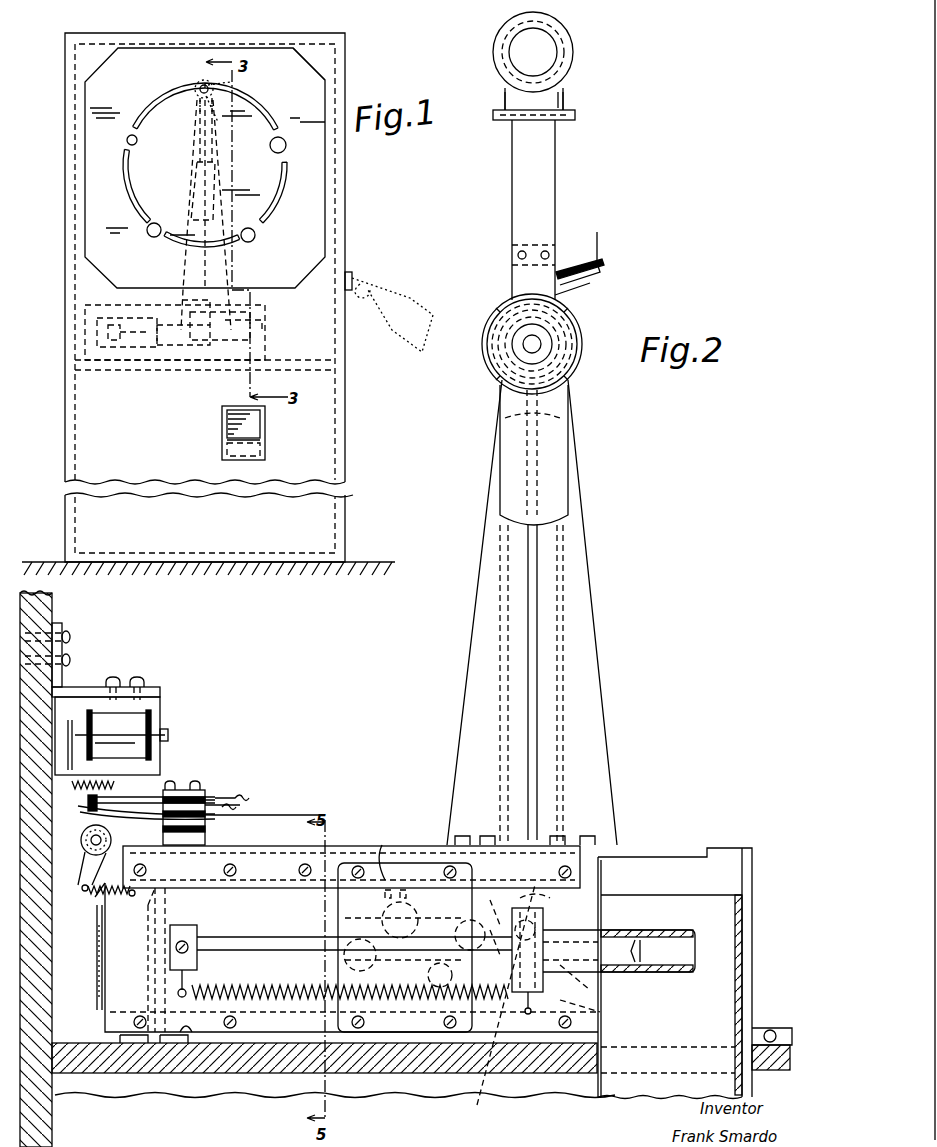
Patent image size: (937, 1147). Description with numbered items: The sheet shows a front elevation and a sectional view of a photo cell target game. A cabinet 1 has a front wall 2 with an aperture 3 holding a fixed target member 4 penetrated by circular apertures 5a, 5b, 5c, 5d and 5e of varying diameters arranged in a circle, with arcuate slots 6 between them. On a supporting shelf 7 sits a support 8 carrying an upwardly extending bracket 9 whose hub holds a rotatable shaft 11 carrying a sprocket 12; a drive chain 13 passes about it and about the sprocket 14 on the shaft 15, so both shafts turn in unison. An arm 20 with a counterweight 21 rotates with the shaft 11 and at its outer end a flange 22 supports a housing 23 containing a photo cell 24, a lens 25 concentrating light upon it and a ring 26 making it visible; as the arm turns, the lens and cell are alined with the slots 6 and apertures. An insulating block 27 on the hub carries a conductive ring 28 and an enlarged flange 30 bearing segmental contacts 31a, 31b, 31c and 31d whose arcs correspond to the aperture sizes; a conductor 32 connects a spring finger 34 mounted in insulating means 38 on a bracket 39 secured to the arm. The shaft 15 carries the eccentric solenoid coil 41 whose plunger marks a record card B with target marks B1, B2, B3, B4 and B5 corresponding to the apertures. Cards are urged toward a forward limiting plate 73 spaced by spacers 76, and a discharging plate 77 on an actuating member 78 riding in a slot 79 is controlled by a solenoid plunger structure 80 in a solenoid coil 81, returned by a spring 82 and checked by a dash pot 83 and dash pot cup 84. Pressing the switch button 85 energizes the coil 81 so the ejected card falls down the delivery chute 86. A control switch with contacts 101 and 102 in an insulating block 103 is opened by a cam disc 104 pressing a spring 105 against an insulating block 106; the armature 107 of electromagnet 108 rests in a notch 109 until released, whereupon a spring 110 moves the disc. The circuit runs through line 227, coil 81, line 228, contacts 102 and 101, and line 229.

In FIG. 1, the cabinet 1 is at (357, 191).
In FIG. 1, the front wall 2 is at (125, 407).
In FIG. 1, the aperture 3 is at (315, 80).
In FIG. 1, the fixed target member 4 is at (135, 66).
In FIG. 1, the circular aperture 5a is at (286, 146).
In FIG. 1, the circular aperture 5b is at (255, 236).
In FIG. 1, the circular aperture 5c is at (152, 238).
In FIG. 1, the circular aperture 5d is at (128, 143).
In FIG. 1, the circular aperture 5e is at (200, 86).
In FIG. 1, the arcuate slots 6 is at (160, 105).
In FIG. 1, the supporting shelf 7 is at (320, 372).
In FIG. 2, the supporting shelf 7 is at (250, 1068).
In FIG. 1, the support 8 is at (268, 312).
In FIG. 2, the support 8 is at (650, 856).
In FIG. 1, the bracket 9 is at (184, 271).
In FIG. 2, the bracket 9 is at (583, 676).
In FIG. 1, the rotatable shaft 11 is at (212, 172).
In FIG. 2, the rotatable shaft 11 is at (535, 346).
In FIG. 2, the sprocket 12 is at (570, 370).
In FIG. 2, the drive chain 13 is at (565, 583).
In FIG. 2, the sprocket 14 is at (560, 900).
In FIG. 2, the shaft 15 is at (525, 1012).
In FIG. 1, the arm 20 is at (200, 148).
In FIG. 2, the arm 20 is at (545, 190).
In FIG. 1, the counterweight 21 is at (192, 200).
In FIG. 2, the counterweight 21 is at (545, 498).
In FIG. 1, the shelf or flange 22 is at (220, 113).
In FIG. 2, the shelf or flange 22 is at (575, 116).
In FIG. 1, the housing 23 is at (198, 104).
In FIG. 2, the housing 23 is at (565, 98).
In FIG. 2, the photo cell 24 is at (512, 52).
In FIG. 2, the lens 25 is at (552, 46).
In FIG. 1, the ring 26 is at (231, 83).
In FIG. 2, the ring 26 is at (566, 55).
In FIG. 2, the insulating block 27 is at (505, 342).
In FIG. 2, the conductive ring 28 is at (510, 318).
In FIG. 2, the enlarged flange 30 is at (495, 360).
In FIG. 2, the segmental contact 31a is at (580, 330).
In FIG. 2, the segmental contact 31b is at (570, 385).
In FIG. 2, the segmental contact 31c is at (498, 385).
In FIG. 2, the segmental contact 31d is at (495, 325).
In FIG. 2, the conductor 32 is at (605, 260).
In FIG. 2, the spring finger 34 is at (570, 292).
In FIG. 2, the insulating means 38 is at (597, 232).
In FIG. 2, the bracket 39 is at (558, 262).
In FIG. 2, the solenoid coil 41 is at (598, 893).
In FIG. 1, the forward limiting plate 73 is at (97, 350).
In FIG. 2, the forward limiting plate 73 is at (110, 1021).
In FIG. 2, the spacers 76 is at (145, 908).
In FIG. 2, the discharging plate 77 is at (97, 960).
In FIG. 2, the actuating member 78 is at (182, 925).
In FIG. 1, the slot 79 is at (130, 348).
In FIG. 2, the slot 79 is at (215, 957).
In FIG. 1, the solenoid plunger structure 80 is at (145, 345).
In FIG. 2, the solenoid plunger structure 80 is at (272, 932).
In FIG. 1, the solenoid coil 81 is at (192, 348).
In FIG. 2, the solenoid coil 81 is at (426, 935).
In FIG. 2, the spring 82 is at (250, 1005).
In FIG. 1, the dash pot 83 is at (215, 340).
In FIG. 2, the dash pot 83 is at (668, 930).
In FIG. 2, the dash pot cup 84 is at (545, 990).
In FIG. 1, the switch button 85 is at (352, 274).
In FIG. 1, the delivery chute 86 is at (254, 433).
In FIG. 2, the delivery chute 86 is at (712, 1016).
In FIG. 2, the contact 101 is at (160, 800).
In FIG. 2, the contact 102 is at (210, 775).
In FIG. 2, the insulating block 103 is at (215, 800).
In FIG. 2, the cam disc 104 is at (86, 892).
In FIG. 2, the spring 105 is at (112, 815).
In FIG. 2, the insulating block 106 is at (151, 795).
In FIG. 2, the armature 107 is at (68, 730).
In FIG. 2, the electromagnet 108 is at (135, 725).
In FIG. 2, the notch 109 is at (82, 850).
In FIG. 2, the spring 110 is at (95, 900).
In FIG. 2, the line 227 is at (370, 852).
In FIG. 2, the line 228 is at (255, 815).
In FIG. 2, the line 229 is at (240, 792).
In FIG. 2, the record card B is at (260, 905).
In FIG. 2, the target mark B1 is at (598, 981).
In FIG. 2, the target mark B2 is at (598, 1012).
In FIG. 2, the target mark B3 is at (502, 1006).
In FIG. 2, the target mark B4 is at (486, 934).
In FIG. 2, the target mark B5 is at (489, 909).